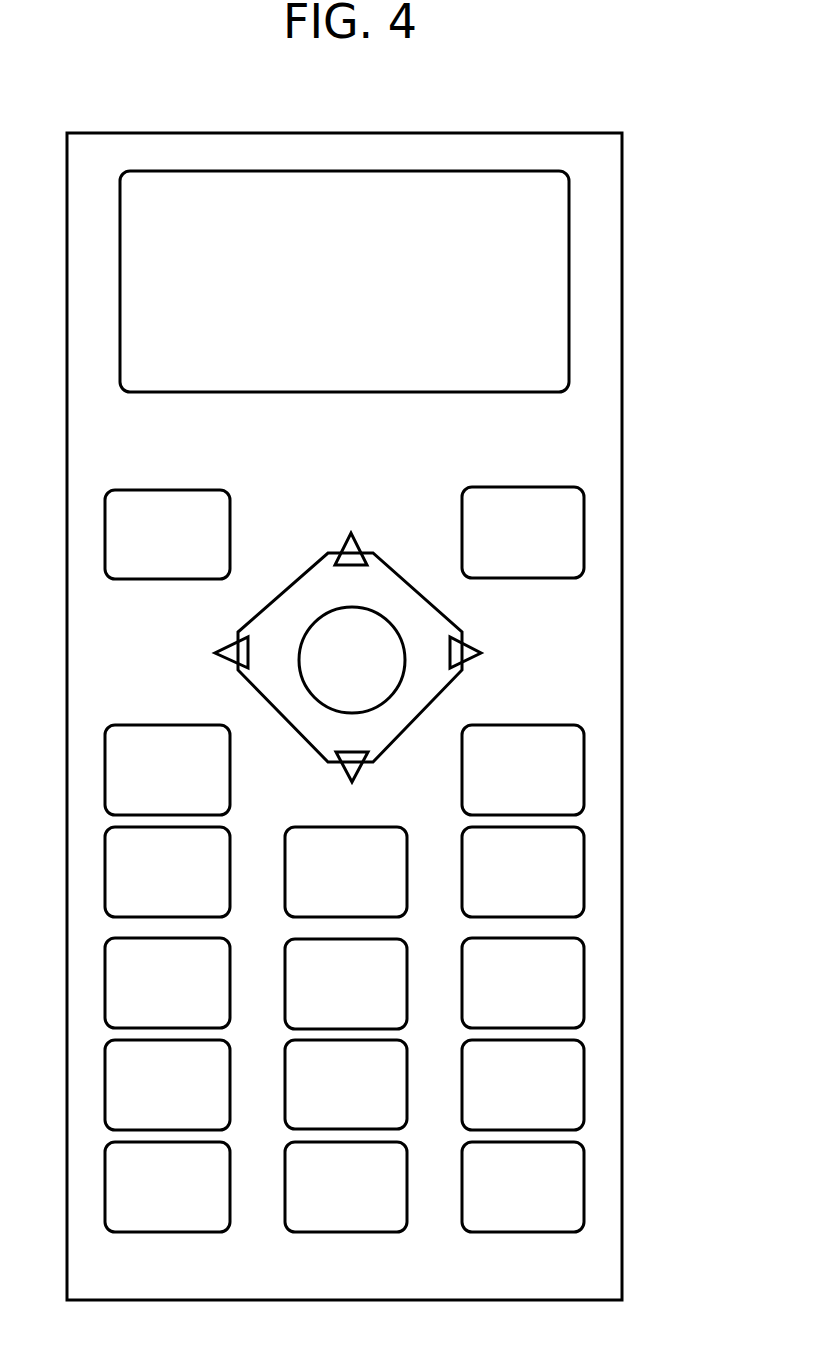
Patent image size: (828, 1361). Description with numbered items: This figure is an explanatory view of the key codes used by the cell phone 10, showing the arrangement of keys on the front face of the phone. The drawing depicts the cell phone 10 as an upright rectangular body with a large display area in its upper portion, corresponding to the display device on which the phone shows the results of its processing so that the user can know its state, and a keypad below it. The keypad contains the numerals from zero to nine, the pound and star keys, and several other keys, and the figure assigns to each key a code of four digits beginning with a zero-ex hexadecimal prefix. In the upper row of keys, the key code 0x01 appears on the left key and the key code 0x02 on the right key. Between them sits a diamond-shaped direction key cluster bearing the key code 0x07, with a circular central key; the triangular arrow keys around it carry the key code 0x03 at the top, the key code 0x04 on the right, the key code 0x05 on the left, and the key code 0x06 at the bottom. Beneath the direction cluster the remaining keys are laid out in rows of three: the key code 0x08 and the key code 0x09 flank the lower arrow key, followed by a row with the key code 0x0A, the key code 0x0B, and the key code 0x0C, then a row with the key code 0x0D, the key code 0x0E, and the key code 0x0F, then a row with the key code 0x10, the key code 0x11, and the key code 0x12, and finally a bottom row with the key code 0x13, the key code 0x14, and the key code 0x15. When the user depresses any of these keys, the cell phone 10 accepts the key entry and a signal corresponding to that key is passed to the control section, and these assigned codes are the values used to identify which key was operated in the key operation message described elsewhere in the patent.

The cell phone 10 is at (622, 847).
The key code 0x01 is at (167, 534).
The key code 0x02 is at (523, 532).
The key code 0x03 is at (352, 526).
The key code 0x04 is at (509, 651).
The key code 0x05 is at (182, 651).
The key code 0x06 is at (347, 786).
The key code 0x07 is at (306, 568).
The key code 0x08 is at (167, 770).
The key code 0x09 is at (523, 770).
The key code 0x0A is at (167, 872).
The key code 0x0B is at (346, 872).
The key code 0x0C is at (523, 872).
The key code 0x0D is at (167, 983).
The key code 0x0E is at (346, 984).
The key code 0x0F is at (523, 983).
The key code 0x10 is at (167, 1085).
The key code 0x11 is at (346, 1084).
The key code 0x12 is at (523, 1085).
The key code 0x13 is at (167, 1187).
The key code 0x14 is at (346, 1187).
The key code 0x15 is at (523, 1187).